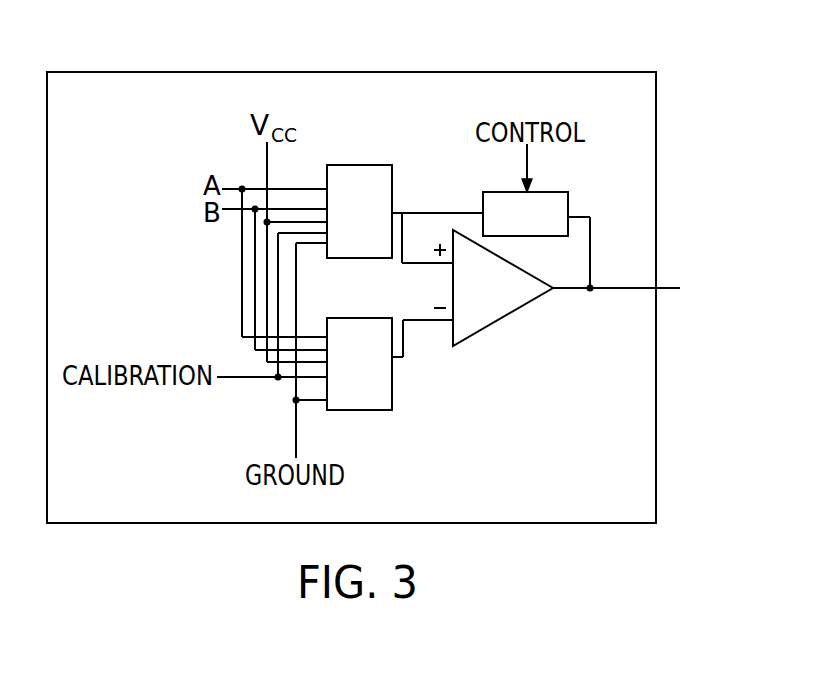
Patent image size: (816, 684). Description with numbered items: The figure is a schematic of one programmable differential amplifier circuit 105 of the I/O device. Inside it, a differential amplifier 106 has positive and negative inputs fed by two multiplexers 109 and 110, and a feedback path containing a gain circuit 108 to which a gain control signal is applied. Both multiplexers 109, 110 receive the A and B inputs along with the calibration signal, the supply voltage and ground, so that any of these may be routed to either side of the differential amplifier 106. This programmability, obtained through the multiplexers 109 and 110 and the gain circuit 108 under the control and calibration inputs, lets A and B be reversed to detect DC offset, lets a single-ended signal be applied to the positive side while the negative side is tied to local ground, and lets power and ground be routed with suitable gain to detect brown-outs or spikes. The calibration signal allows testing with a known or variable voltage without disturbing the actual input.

The differential amplifier circuit 105 is at (587, 83).
The differential amplifier 106 is at (482, 308).
The gain circuit 108 is at (563, 195).
The multiplexer 109 is at (393, 182).
The multiplexer 110 is at (380, 385).